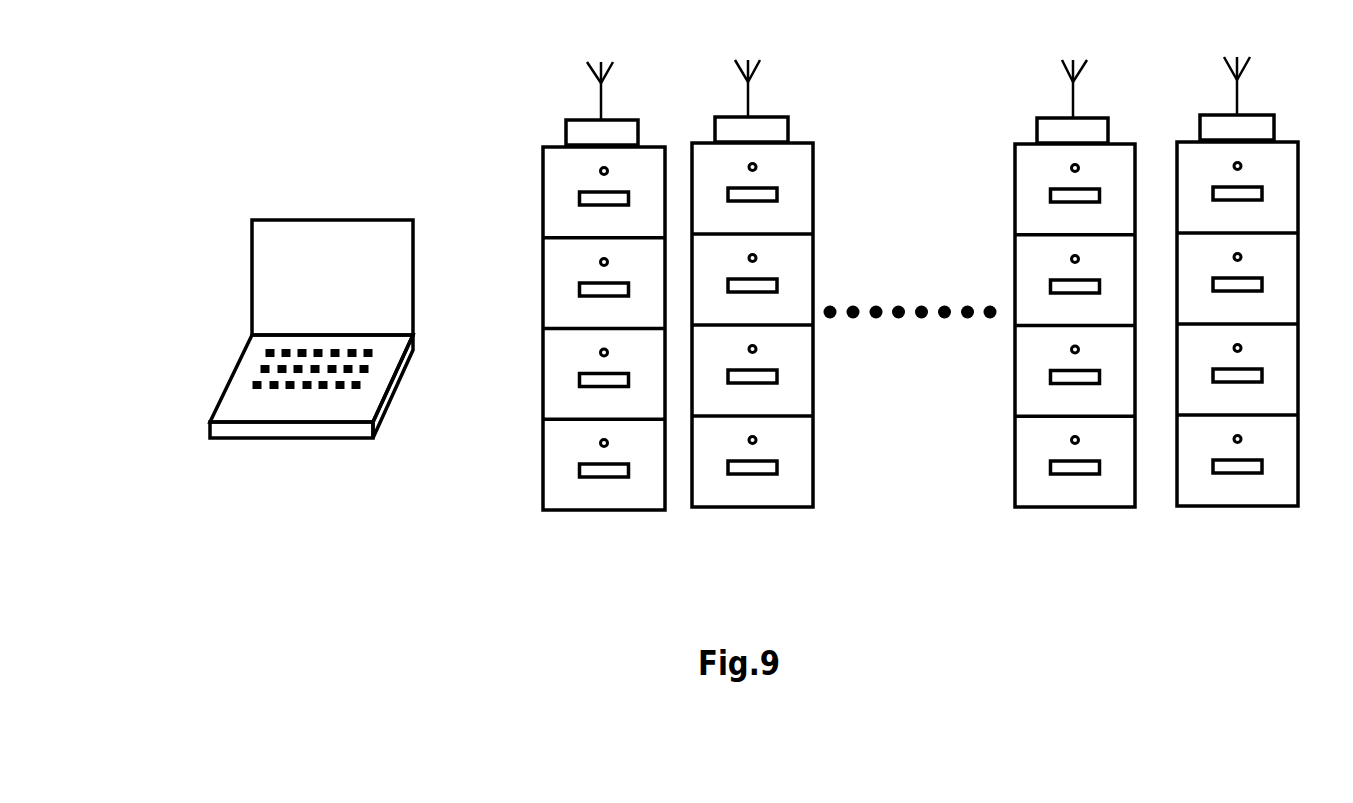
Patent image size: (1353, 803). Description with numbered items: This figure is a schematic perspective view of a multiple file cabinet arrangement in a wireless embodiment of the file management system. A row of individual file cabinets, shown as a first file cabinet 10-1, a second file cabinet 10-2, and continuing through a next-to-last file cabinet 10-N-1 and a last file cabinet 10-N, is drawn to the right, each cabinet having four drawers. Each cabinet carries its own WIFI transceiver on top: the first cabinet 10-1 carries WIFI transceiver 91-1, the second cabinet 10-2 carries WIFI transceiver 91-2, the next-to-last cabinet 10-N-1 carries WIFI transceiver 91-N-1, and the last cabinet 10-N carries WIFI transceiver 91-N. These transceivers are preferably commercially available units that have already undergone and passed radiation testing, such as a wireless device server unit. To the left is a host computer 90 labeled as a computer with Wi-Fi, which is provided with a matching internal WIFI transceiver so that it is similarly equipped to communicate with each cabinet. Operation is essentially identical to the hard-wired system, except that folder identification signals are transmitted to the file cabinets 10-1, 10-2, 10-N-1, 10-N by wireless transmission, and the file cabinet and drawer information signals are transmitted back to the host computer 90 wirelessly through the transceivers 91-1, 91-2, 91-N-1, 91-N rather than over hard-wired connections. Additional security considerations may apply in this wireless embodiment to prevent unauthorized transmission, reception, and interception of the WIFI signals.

The host computer 90 is at (318, 410).
The file cabinet 10-1 is at (598, 517).
The file cabinet 10-2 is at (755, 517).
The file cabinet 10-N-1 is at (1072, 518).
The file cabinet 10-N is at (1255, 511).
The WIFI transceiver 91-1 is at (590, 130).
The WIFI transceiver 91-2 is at (737, 128).
The WIFI transceiver 91-N-1 is at (1063, 130).
The WIFI transceiver 91-N is at (1253, 128).